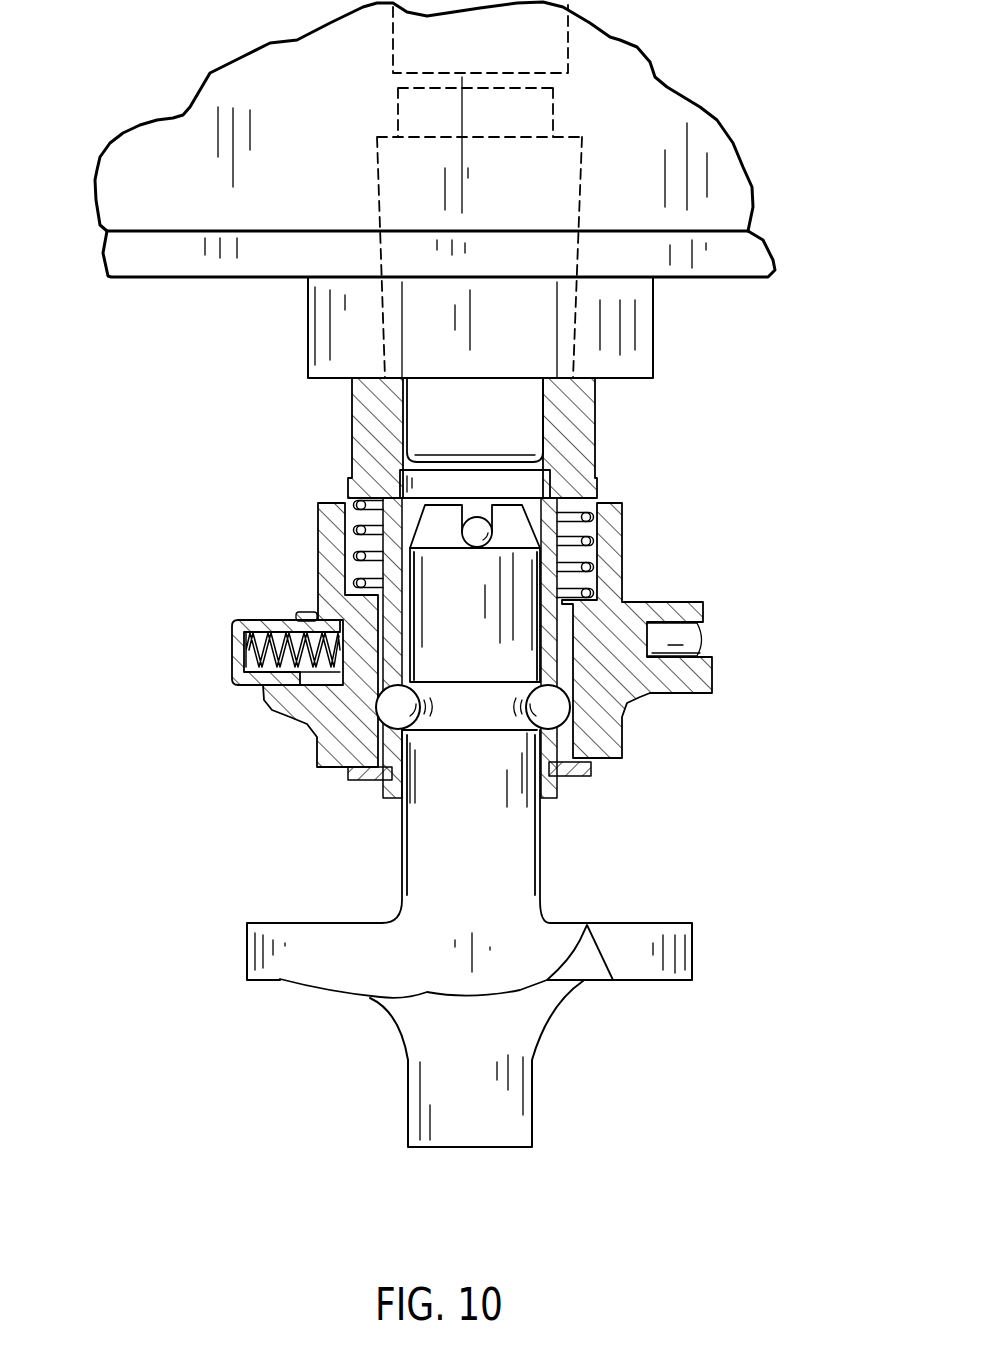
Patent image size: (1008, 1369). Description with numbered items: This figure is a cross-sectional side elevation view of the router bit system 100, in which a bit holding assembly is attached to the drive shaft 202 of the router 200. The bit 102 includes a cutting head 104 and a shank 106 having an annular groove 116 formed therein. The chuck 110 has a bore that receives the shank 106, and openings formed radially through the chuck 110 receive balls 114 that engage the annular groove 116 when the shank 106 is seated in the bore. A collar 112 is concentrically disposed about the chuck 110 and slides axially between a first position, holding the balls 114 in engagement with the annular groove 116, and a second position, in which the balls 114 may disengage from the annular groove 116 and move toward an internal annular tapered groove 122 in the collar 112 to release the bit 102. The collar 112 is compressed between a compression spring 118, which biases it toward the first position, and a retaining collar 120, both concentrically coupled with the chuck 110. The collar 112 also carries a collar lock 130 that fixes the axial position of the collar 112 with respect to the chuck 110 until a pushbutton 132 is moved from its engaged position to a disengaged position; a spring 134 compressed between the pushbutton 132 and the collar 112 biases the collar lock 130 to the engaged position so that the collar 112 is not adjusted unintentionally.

The valve assembly 100 is at (350, 440).
The bit 102 is at (407, 1077).
The cutting head 104 is at (340, 962).
The shank 106 is at (433, 838).
The chuck 110 is at (597, 445).
The collar 112 is at (622, 572).
The ball 114 is at (545, 812).
The annular groove 116 is at (463, 693).
The compression spring 118 is at (622, 515).
The retaining collar 120 is at (365, 778).
The internal annular tapered groove 122 is at (317, 765).
The collar lock 130 is at (215, 666).
The pushbutton 132 is at (230, 658).
The spring 134 is at (237, 682).
The router 200 is at (722, 283).
The drive shaft 202 is at (547, 210).